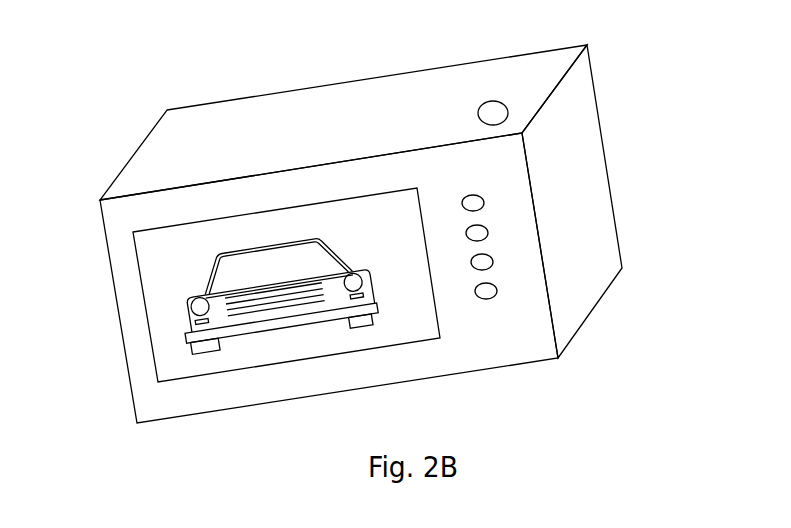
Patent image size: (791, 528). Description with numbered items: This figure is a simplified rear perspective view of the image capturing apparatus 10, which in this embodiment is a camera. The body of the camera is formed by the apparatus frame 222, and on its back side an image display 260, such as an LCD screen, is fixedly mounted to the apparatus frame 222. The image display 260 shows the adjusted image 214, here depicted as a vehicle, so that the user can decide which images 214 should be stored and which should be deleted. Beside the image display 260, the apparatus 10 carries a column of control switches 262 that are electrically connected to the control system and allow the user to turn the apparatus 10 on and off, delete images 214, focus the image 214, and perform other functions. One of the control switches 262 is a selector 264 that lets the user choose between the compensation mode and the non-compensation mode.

The image capturing apparatus 10 is at (165, 98).
The apparatus frame 222 is at (595, 201).
The image display 260 is at (136, 272).
The adjusted image 214 is at (173, 325).
The selector 264 is at (578, 217).
The control switches 262 is at (510, 257).